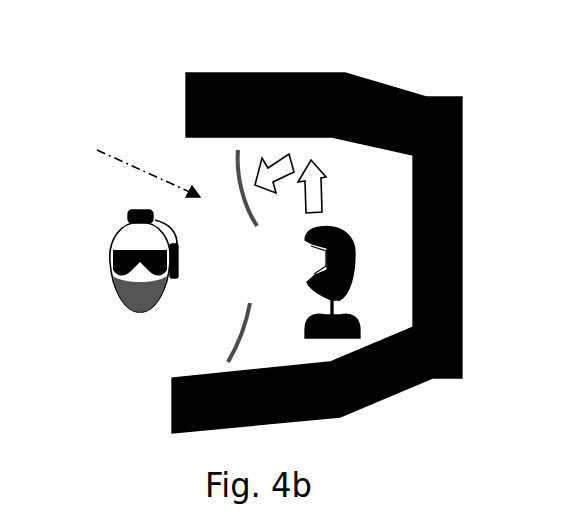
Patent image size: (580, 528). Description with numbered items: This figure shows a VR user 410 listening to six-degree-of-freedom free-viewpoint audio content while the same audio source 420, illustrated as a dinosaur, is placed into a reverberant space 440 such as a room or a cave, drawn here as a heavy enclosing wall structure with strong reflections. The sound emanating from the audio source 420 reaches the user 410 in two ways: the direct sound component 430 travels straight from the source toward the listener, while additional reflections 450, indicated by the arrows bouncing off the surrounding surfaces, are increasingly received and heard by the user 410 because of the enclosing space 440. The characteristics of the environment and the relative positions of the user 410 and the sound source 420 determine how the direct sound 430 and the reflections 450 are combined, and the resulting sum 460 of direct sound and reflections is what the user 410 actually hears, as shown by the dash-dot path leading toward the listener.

The user 410 is at (125, 303).
The audio source 420 is at (312, 297).
The direct sound component 430 is at (323, 260).
The reverberant space 440 is at (250, 73).
The reflections 450 is at (322, 190).
The sum of direct sound and reflections 460 is at (123, 162).